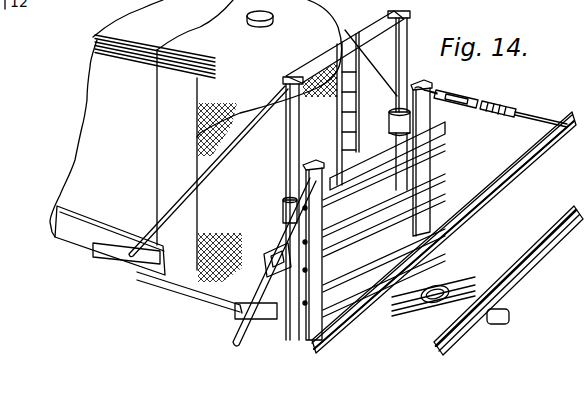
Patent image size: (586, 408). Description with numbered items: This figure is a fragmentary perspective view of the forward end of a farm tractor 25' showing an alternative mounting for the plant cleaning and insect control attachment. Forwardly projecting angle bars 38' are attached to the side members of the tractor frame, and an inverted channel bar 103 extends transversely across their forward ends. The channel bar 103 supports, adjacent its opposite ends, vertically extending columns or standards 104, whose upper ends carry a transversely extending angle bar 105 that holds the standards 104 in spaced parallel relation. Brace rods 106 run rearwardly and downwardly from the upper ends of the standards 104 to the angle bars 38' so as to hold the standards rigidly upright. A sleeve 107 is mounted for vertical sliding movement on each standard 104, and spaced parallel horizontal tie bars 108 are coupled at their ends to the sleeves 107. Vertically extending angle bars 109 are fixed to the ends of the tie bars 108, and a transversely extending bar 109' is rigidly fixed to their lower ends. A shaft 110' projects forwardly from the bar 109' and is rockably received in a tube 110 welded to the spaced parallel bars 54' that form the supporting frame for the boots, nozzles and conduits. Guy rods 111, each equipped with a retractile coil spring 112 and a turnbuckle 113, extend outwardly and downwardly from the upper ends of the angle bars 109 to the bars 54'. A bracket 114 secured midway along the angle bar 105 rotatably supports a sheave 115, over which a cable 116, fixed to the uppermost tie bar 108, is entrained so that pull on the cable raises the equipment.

The tractor 25' is at (182, 141).
The forwardly projecting angle bars 38' is at (166, 266).
The spaced parallel bars 54' is at (447, 233).
The inverted channel bar 103 is at (357, 233).
The columns or standards 104 is at (289, 128).
The transversely extending angle bar 105 is at (357, 33).
The brace rods 106 is at (200, 159).
The sleeve 107 is at (287, 216).
The tie bars 108 is at (437, 122).
The vertically extending angle bars 109 is at (359, 214).
The transversely extending bar 109' is at (384, 291).
The tube 110 is at (450, 293).
The shaft 110' is at (426, 313).
The guy rods 111 is at (277, 229).
The retractile coil spring 112 is at (503, 110).
The turnbuckle 113 is at (473, 100).
The bracket 114 is at (333, 57).
The sheave 115 is at (337, 97).
The cable 116 is at (338, 117).